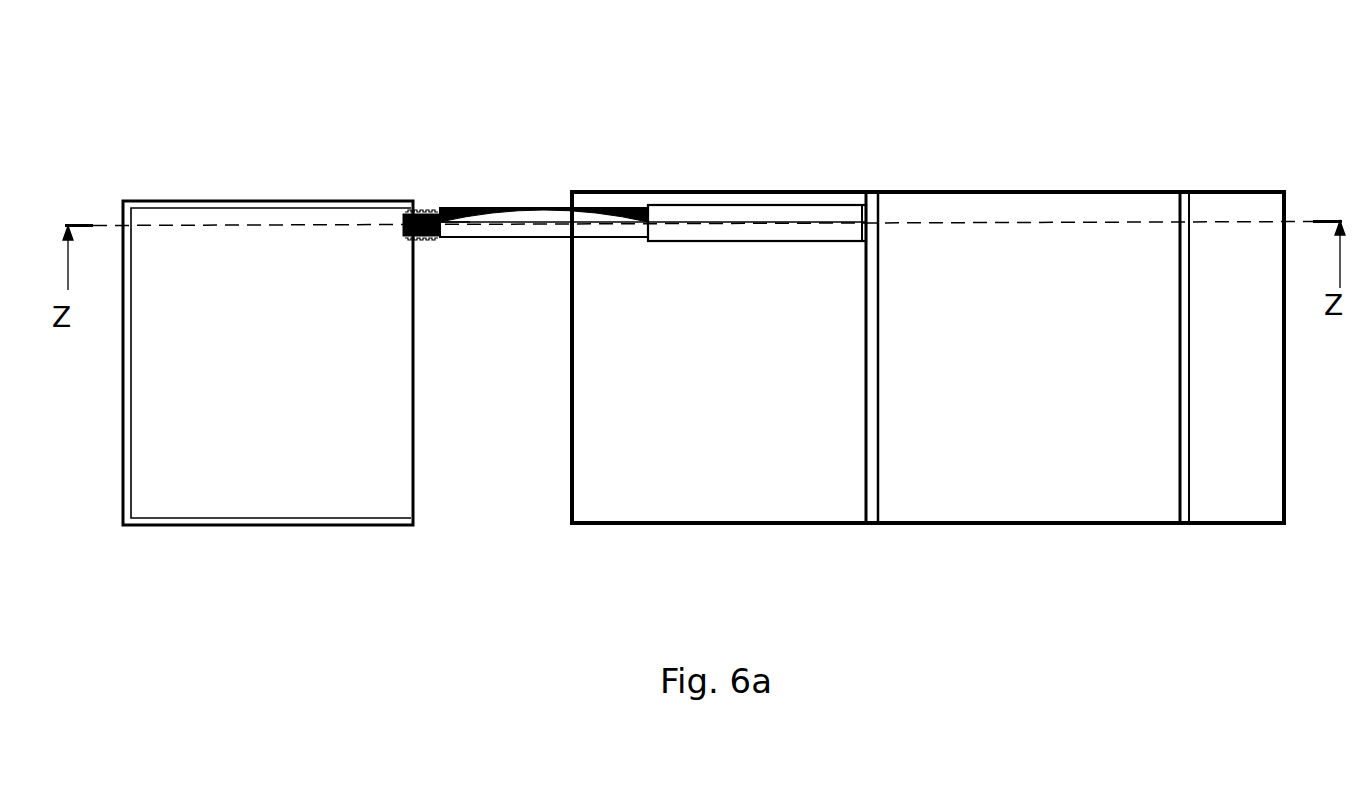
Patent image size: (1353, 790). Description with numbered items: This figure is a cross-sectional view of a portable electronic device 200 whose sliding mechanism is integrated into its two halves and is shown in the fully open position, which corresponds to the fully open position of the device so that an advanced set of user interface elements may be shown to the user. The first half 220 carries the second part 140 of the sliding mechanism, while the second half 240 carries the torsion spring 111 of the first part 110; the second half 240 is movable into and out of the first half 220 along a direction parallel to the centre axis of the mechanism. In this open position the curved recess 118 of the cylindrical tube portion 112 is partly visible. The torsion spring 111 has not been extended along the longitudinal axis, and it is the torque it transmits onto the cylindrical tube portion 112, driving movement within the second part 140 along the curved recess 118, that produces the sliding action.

The portable electronic device 200 is at (533, 138).
The second half 240 is at (220, 200).
The first half 220 is at (1050, 530).
The first part 110 is at (484, 258).
The torsion spring 111 is at (425, 204).
The cylindrical tube portion 112 is at (862, 203).
The curved recess 118 is at (463, 218).
The second part 140 is at (700, 260).